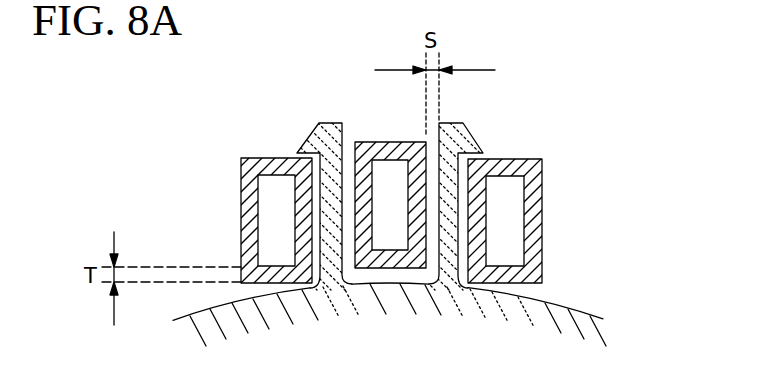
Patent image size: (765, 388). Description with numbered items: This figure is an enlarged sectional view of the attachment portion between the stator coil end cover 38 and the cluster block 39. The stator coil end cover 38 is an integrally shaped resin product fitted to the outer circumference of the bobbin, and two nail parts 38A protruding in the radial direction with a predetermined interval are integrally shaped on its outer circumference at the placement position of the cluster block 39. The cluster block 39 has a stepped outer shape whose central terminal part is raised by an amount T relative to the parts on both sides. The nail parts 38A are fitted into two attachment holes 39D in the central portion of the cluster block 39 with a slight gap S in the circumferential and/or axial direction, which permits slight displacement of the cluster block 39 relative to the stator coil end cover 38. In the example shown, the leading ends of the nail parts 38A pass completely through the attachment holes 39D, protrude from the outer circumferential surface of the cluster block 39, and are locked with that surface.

The stator coil end cover 38 is at (576, 311).
The nail parts 38A is at (312, 128).
The cluster block 39 is at (391, 212).
The attachment holes 39D is at (313, 199).